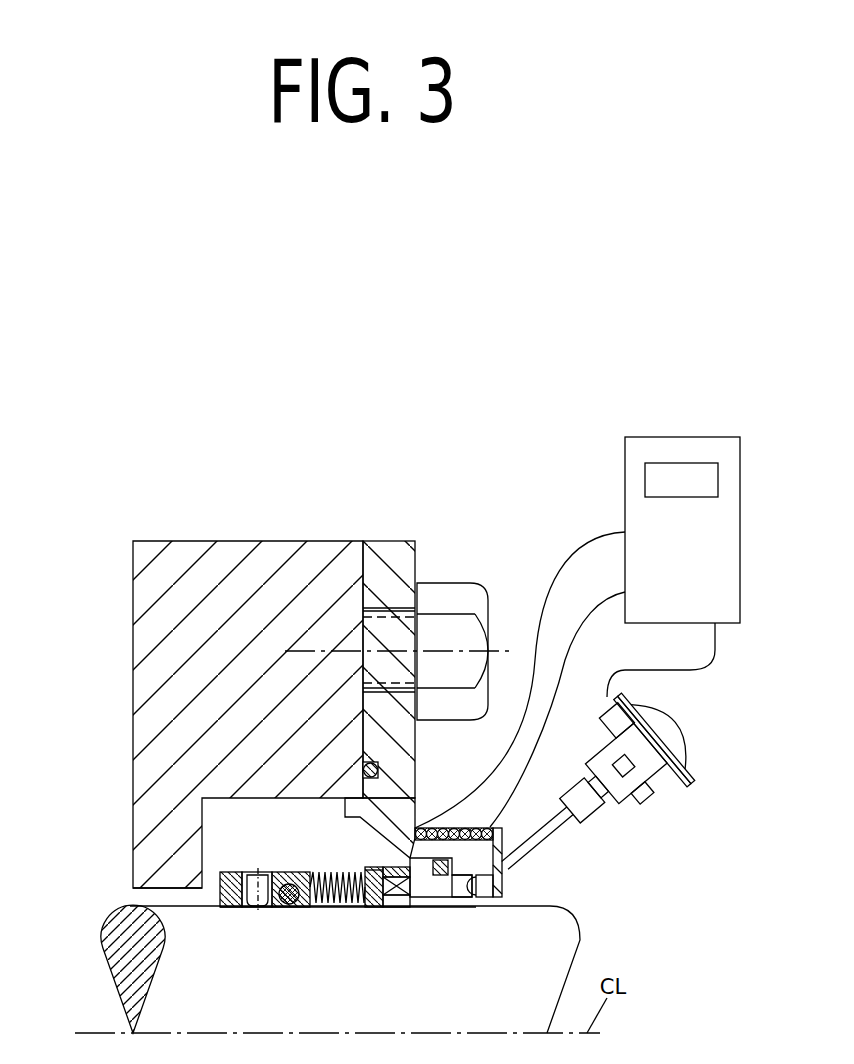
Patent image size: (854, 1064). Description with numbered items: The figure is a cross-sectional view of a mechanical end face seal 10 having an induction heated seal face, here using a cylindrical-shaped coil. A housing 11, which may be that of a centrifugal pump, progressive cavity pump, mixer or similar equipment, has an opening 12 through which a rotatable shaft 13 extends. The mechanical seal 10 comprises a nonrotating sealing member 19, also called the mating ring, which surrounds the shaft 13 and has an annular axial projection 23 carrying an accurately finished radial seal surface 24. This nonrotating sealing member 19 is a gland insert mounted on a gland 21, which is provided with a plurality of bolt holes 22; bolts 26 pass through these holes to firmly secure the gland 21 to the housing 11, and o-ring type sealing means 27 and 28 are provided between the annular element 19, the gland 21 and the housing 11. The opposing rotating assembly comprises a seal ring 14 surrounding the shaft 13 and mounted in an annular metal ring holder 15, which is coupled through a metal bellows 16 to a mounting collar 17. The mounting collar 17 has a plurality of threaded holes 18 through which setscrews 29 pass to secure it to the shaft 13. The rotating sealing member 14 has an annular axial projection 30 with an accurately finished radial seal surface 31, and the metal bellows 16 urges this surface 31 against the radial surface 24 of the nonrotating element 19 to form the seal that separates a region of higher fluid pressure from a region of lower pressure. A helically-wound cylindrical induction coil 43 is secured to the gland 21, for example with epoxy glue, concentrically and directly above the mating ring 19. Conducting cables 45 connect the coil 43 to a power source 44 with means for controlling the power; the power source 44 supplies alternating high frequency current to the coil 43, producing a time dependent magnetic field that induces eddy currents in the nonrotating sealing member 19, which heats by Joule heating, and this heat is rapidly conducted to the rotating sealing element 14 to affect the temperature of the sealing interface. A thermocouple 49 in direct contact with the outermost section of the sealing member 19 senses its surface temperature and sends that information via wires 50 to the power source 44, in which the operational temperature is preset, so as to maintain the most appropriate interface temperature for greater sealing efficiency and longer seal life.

The mechanical seal 10 is at (223, 906).
The housing 11 is at (247, 578).
The opening 12 is at (130, 906).
The rotatable shaft 13 is at (167, 1000).
The seal ring 14 is at (372, 871).
The annular metal ring holder 15 is at (360, 866).
The metal bellows 16 is at (316, 872).
The mounting collar 17 is at (231, 872).
The threaded holes 18 is at (243, 907).
The nonrotating sealing member 19 is at (471, 898).
The gland 21 is at (408, 548).
The bolt holes 22 is at (383, 697).
The annular axial projection 23 is at (440, 872).
The radial seal surface 24 is at (433, 863).
The bolts 26 is at (453, 597).
The sealing means 27 is at (457, 880).
The sealing means 28 is at (380, 770).
The setscrews 29 is at (258, 908).
The annular axial projection 30 is at (408, 863).
The radial seal surface 31 is at (408, 878).
The induction coil 43 is at (494, 837).
The power source 44 is at (741, 553).
The conducting cables 45 is at (554, 574).
The thermocouple 49 is at (677, 800).
The wires 50 is at (685, 670).